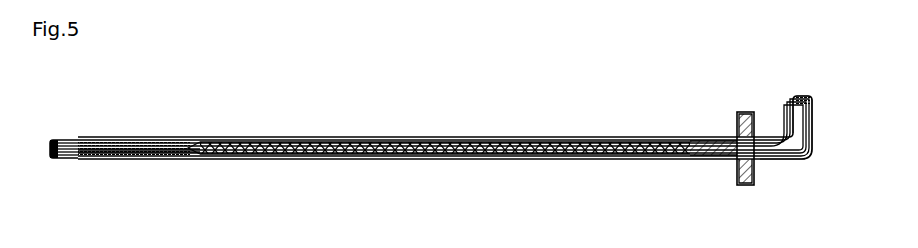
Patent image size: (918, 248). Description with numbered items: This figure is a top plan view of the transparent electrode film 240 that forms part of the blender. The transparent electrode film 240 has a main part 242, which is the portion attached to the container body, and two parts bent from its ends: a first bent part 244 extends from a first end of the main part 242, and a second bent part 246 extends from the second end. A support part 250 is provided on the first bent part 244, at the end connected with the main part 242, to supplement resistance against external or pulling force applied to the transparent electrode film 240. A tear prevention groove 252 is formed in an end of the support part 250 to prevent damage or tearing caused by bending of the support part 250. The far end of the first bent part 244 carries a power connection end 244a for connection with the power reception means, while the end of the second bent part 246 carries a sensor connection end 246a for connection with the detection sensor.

The transparent electrode film 240 is at (409, 114).
The main part 242 is at (412, 161).
The first bent part 244 is at (790, 161).
The power connection end 244a is at (788, 99).
The second bent part 246 is at (143, 161).
The sensor connection end 246a is at (58, 161).
The support part 250 is at (741, 187).
The tear prevention groove 252 is at (737, 128).